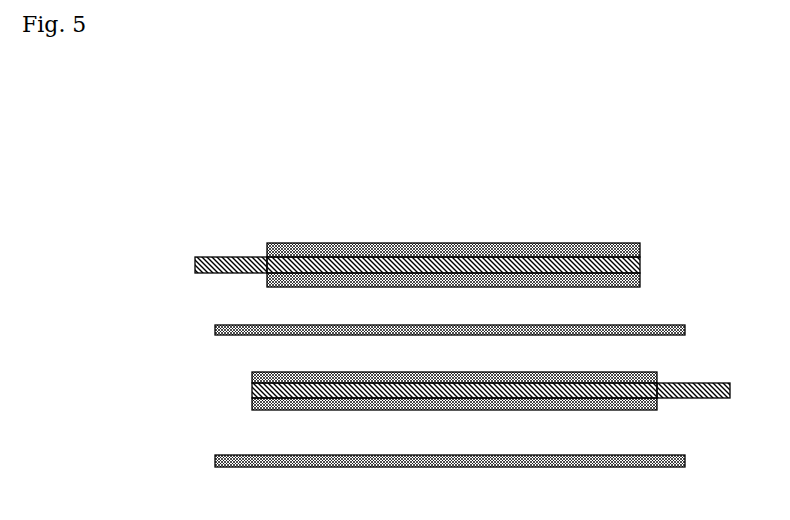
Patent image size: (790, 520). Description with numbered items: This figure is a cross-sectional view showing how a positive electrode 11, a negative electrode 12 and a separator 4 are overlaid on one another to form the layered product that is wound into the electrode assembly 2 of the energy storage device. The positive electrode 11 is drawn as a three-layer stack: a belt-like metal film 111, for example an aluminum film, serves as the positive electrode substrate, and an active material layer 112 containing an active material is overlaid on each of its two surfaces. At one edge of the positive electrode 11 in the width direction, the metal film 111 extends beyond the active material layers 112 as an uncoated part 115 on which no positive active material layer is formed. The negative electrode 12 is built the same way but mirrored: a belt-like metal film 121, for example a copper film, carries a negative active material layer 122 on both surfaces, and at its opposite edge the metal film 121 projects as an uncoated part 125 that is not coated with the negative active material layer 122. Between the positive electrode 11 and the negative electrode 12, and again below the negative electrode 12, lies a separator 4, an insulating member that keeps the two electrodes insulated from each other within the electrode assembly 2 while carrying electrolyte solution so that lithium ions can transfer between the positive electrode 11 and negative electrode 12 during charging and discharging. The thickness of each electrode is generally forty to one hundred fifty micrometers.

The electrode assembly 2 is at (138, 138).
The positive electrode 11 is at (740, 223).
The metal film 111 is at (640, 265).
The active material layer 112 is at (640, 247).
The uncoated part 115 is at (210, 252).
The separator 4 is at (215, 330).
The negative electrode 12 is at (143, 367).
The metal film 121 is at (252, 391).
The negative active material layer 122 is at (252, 375).
The uncoated part 125 is at (692, 401).